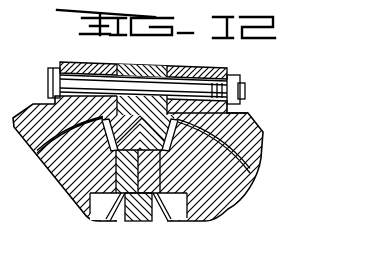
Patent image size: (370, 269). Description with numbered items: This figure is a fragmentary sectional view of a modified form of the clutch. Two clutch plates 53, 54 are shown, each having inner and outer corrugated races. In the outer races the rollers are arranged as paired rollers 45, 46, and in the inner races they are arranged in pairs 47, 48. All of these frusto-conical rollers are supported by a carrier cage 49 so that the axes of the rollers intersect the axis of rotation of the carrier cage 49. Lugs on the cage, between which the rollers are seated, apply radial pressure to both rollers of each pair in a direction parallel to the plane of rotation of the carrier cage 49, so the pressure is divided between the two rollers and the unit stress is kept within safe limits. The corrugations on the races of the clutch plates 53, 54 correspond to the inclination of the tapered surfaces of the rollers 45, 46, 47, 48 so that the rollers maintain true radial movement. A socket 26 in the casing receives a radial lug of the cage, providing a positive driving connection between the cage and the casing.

The socket 26 is at (179, 50).
The paired roller 45 is at (171, 147).
The paired roller 46 is at (116, 140).
The paired roller 47 is at (110, 221).
The paired roller 48 is at (168, 221).
The carrier cage 49 is at (138, 222).
The clutch plate 53 is at (56, 178).
The clutch plate 54 is at (228, 197).